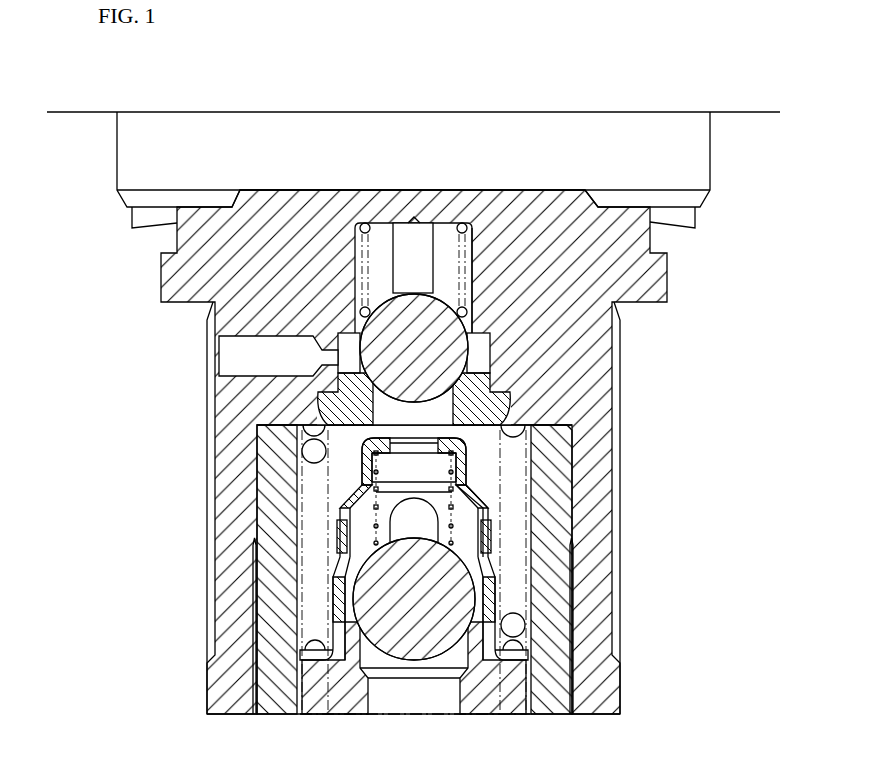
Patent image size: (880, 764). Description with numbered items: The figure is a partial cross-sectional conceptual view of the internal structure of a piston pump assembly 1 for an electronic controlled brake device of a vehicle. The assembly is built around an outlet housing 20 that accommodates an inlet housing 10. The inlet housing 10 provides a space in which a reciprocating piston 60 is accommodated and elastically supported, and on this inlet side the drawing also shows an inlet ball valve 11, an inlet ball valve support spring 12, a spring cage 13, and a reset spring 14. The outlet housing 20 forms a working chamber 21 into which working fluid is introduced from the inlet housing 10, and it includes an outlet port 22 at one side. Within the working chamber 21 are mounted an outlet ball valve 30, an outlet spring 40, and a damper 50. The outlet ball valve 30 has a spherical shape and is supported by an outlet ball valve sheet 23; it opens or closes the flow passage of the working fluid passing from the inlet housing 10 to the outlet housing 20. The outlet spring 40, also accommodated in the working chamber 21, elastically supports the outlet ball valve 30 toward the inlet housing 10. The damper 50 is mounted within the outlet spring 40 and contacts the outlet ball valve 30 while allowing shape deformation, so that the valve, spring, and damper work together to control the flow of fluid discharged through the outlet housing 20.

The piston pump assembly 1 is at (704, 252).
The inlet housing 10 is at (275, 590).
The inlet ball valve 11 is at (427, 609).
The inlet ball valve support spring 12 is at (373, 507).
The spring cage 13 is at (337, 540).
The reset spring 14 is at (312, 449).
The outlet housing 20 is at (185, 279).
The working chamber 21 is at (386, 243).
The outlet port 22 is at (219, 357).
The outlet ball valve sheet 23 is at (320, 419).
The outlet ball valve 30 is at (427, 358).
The outlet spring 40 is at (362, 270).
The damper 50 is at (447, 242).
The reciprocating piston 60 is at (327, 690).